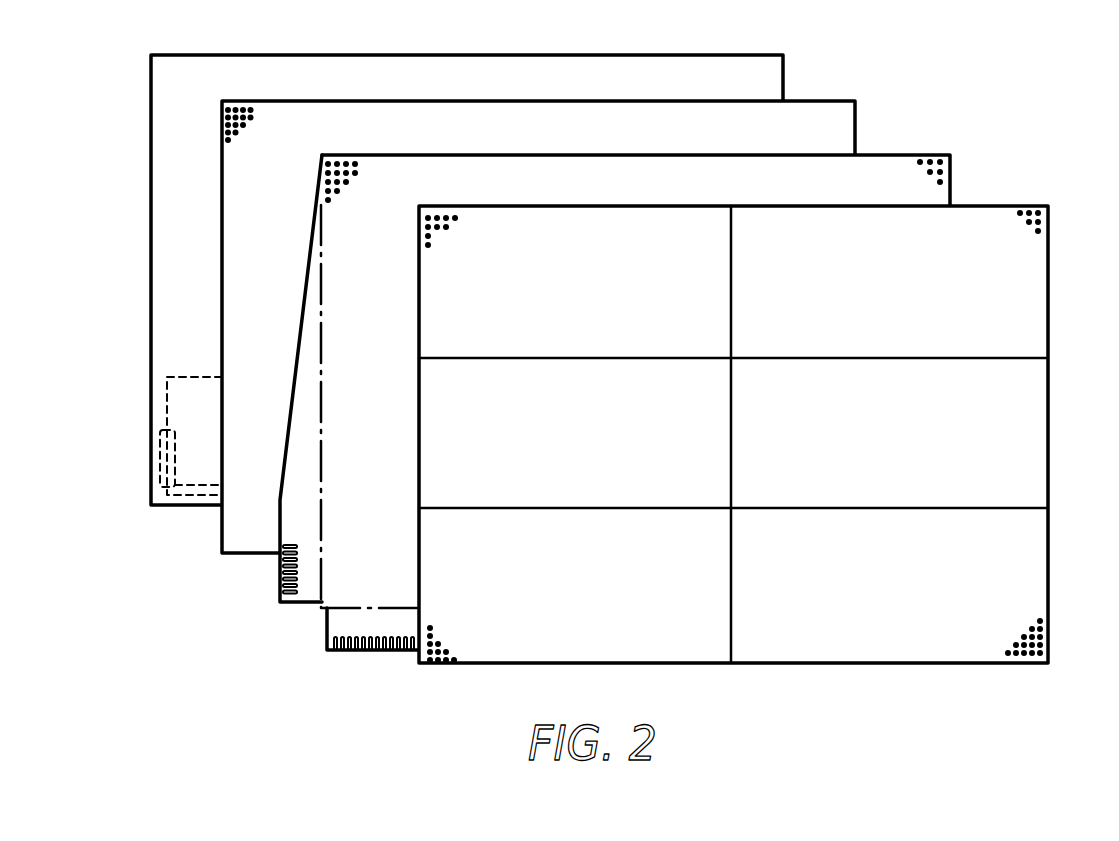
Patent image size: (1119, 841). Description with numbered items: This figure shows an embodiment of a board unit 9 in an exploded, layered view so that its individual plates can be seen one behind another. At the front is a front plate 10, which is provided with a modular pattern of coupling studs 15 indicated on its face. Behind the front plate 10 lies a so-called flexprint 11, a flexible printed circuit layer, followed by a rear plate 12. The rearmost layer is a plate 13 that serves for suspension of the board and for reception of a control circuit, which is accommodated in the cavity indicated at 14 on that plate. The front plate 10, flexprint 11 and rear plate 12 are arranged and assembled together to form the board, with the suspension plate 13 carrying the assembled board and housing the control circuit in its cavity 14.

The board unit 9 is at (593, 338).
The front plate 10 is at (763, 414).
The flexprint 11 is at (898, 167).
The rear plate 12 is at (823, 113).
The plate for suspension of the board 13 is at (458, 259).
The cavity 14 is at (183, 462).
The coupling studs 15 is at (1030, 223).